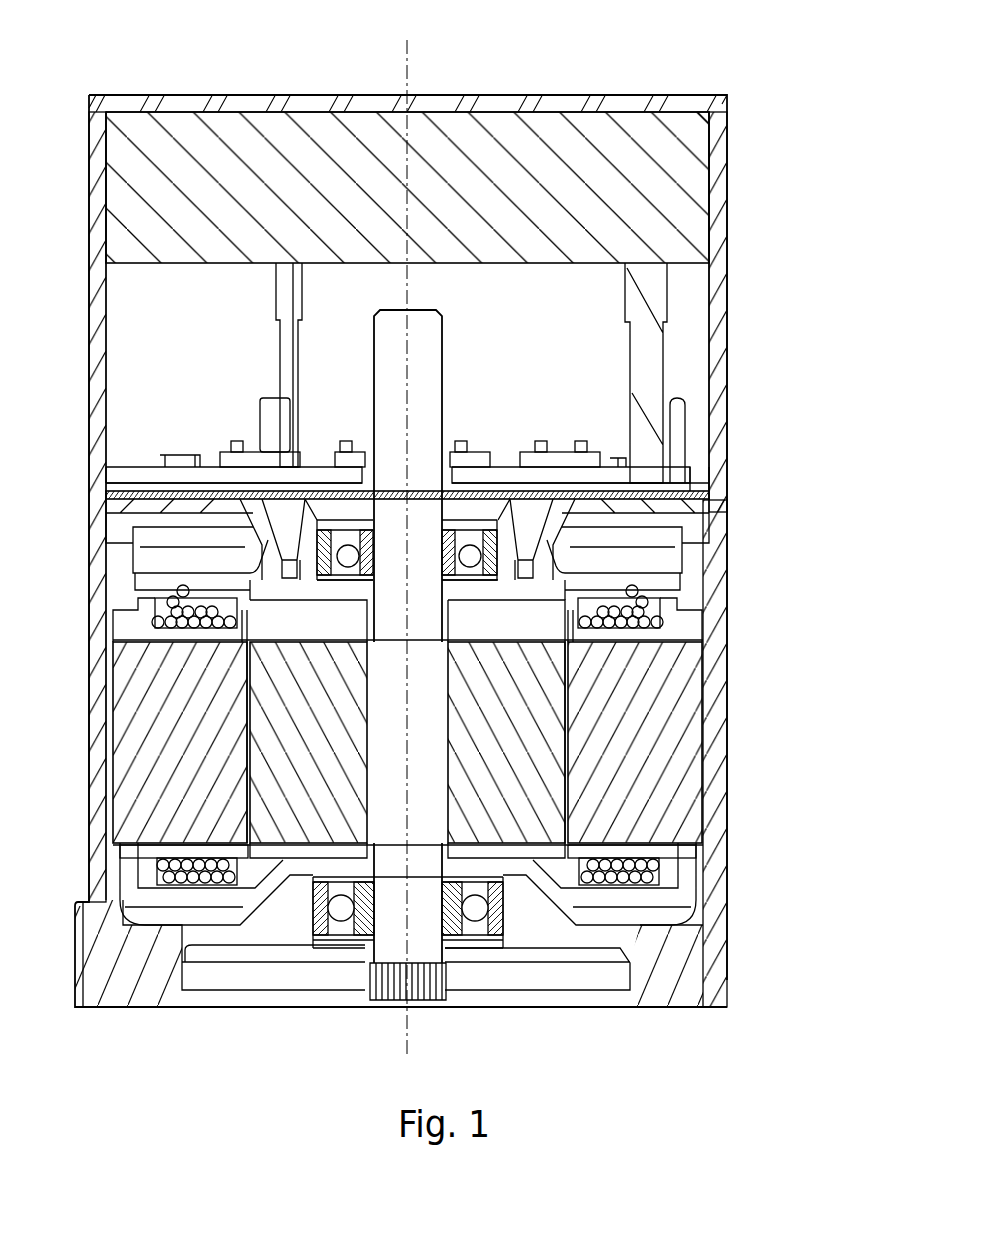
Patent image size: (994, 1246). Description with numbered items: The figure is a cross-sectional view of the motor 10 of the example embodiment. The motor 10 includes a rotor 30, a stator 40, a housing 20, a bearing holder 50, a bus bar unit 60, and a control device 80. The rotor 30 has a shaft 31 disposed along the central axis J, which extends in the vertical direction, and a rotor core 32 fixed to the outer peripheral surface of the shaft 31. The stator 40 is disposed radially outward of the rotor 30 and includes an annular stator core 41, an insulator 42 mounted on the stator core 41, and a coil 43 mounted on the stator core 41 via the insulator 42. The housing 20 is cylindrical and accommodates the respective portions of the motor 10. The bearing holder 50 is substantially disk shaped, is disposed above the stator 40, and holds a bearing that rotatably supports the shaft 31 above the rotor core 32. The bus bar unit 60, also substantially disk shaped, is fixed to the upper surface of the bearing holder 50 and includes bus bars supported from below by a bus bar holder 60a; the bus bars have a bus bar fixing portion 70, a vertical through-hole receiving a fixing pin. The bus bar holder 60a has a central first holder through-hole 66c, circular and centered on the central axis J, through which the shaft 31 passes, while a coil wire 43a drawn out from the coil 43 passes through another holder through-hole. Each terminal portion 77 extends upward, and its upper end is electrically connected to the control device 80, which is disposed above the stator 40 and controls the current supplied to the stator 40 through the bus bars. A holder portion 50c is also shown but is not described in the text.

The motor 10 is at (729, 60).
The housing 20 is at (730, 293).
The rotor 30 is at (360, 858).
The shaft 31 is at (440, 915).
The rotor core 32 is at (280, 830).
The stator 40 is at (711, 770).
The stator core 41 is at (690, 745).
The insulator 42 is at (672, 630).
The coil 43 is at (652, 612).
The coil wire 43a is at (237, 440).
The bearing holder 50 is at (702, 521).
The bearing holder projection 50c is at (458, 470).
The bus bar unit 60 is at (697, 458).
The bus bar holder 60a is at (697, 490).
The first holder through-hole 66c is at (370, 465).
The bus bar fixing portion 70 is at (165, 466).
The terminal portion 77 is at (283, 303).
The control device 80 is at (700, 187).
The central axis J is at (410, 52).